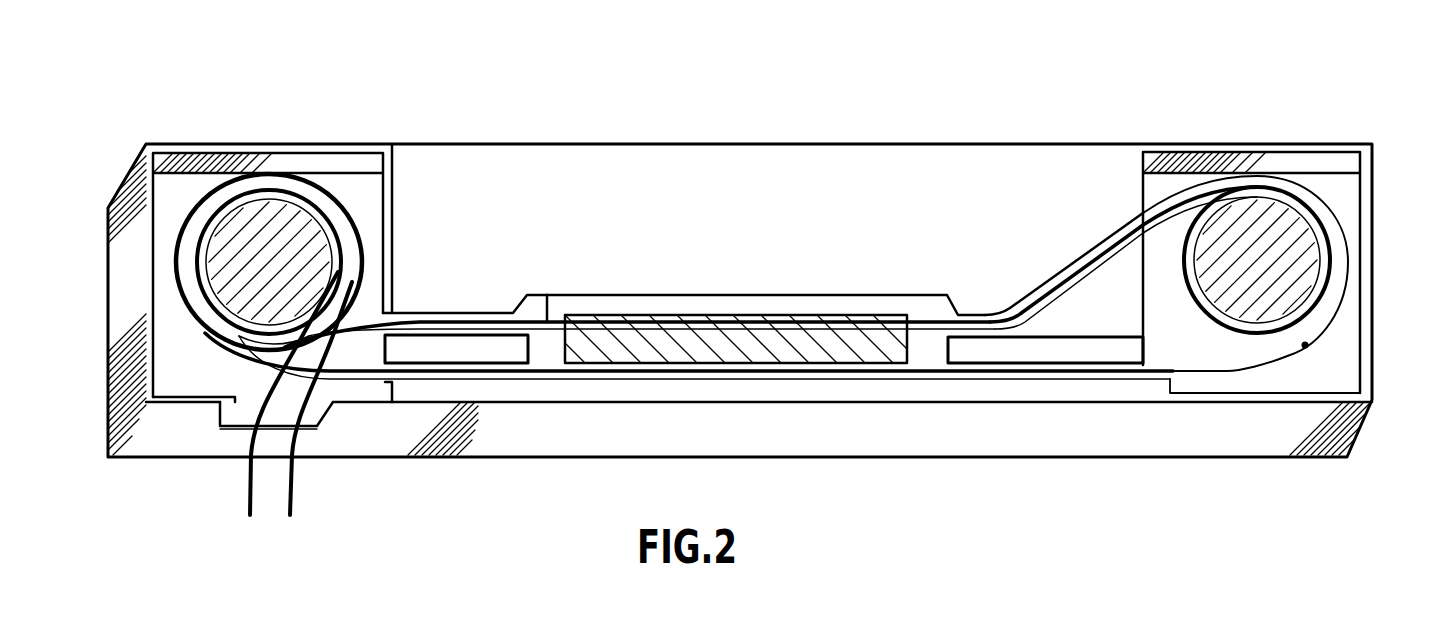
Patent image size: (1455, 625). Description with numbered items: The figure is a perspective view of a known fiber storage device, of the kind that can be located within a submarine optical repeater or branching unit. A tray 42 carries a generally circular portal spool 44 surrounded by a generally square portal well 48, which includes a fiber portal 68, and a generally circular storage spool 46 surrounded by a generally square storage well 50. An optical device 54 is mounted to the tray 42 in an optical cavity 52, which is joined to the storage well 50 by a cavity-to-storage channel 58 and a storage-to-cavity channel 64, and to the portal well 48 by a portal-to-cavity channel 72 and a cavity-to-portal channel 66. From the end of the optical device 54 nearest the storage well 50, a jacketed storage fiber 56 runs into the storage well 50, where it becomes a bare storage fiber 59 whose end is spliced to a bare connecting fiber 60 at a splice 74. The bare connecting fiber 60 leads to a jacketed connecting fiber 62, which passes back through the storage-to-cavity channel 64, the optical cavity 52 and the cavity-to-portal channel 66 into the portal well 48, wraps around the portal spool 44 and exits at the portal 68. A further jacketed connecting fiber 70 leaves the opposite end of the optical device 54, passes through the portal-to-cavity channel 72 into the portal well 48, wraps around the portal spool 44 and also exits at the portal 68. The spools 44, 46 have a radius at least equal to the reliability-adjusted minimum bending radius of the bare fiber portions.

The tray 42 is at (683, 143).
The portal spool 44 is at (247, 300).
The storage spool 46 is at (1290, 258).
The portal well 48 is at (205, 168).
The storage well 50 is at (1340, 200).
The optical cavity 52 is at (848, 300).
The optical device 54 is at (742, 314).
The jacketed storage fiber 56 is at (1000, 306).
The cavity-to-storage channel 58 is at (963, 316).
The bare storage fiber 59 is at (1340, 310).
The bare connecting fiber 60 is at (1228, 373).
The jacketed connecting fiber 62 is at (1100, 373).
The storage-to-cavity channel 64 is at (1000, 380).
The cavity-to-portal channel 66 is at (498, 382).
The fiber portal 68 is at (307, 433).
The jacketed connecting fiber 70 is at (552, 298).
The portal-to-cavity channel 72 is at (435, 311).
The splice 74 is at (1305, 345).